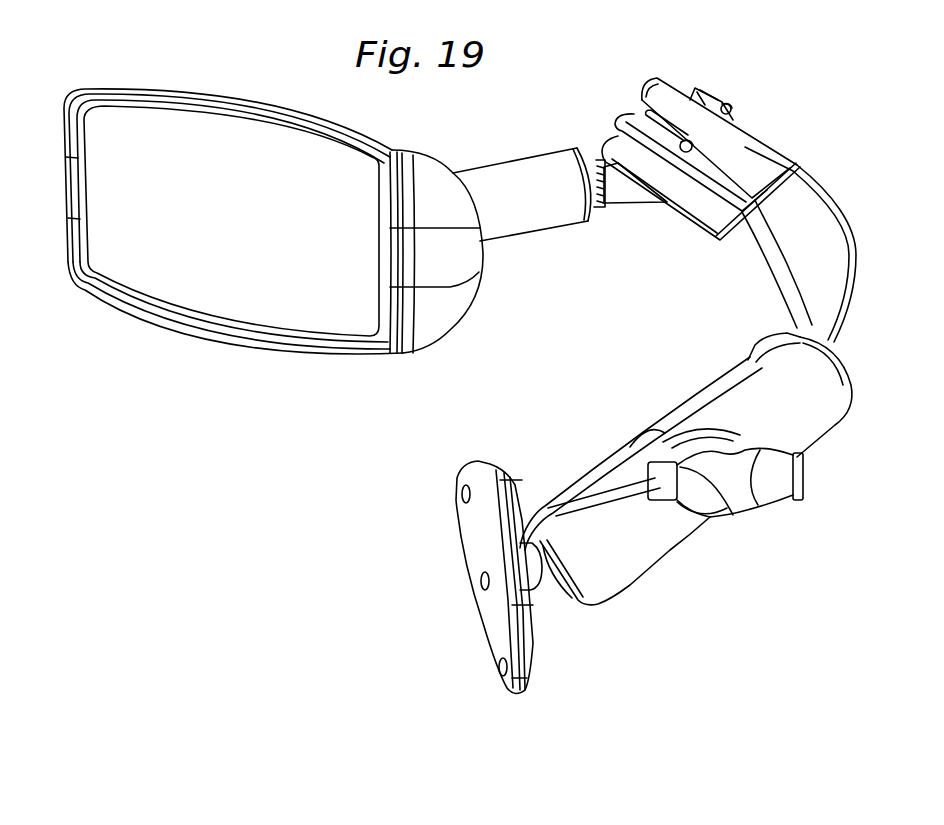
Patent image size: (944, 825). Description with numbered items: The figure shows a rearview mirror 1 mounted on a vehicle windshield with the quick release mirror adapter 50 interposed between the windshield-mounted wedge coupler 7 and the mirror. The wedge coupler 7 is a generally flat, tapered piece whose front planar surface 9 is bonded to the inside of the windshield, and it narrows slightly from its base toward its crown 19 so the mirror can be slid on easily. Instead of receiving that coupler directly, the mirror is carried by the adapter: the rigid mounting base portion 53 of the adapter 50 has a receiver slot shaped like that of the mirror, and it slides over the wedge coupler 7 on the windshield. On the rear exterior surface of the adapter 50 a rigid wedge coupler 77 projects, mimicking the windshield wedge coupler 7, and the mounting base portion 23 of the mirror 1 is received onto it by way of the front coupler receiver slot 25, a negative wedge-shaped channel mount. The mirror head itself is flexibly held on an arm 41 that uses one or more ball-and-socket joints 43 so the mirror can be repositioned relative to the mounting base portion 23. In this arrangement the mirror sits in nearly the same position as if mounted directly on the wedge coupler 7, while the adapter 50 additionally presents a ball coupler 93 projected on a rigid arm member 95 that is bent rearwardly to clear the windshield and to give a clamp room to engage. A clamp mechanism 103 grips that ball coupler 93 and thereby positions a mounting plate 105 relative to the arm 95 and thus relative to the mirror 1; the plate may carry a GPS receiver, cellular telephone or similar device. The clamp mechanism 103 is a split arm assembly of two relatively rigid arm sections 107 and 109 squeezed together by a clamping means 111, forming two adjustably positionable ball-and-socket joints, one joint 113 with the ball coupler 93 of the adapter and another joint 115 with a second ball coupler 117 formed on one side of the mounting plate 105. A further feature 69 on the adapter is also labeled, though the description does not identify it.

The rearview mirror 1 is at (240, 240).
The arm 41 is at (541, 210).
The ball-and-socket joint 43 is at (602, 205).
The mounting base portion 23 is at (724, 203).
The front coupler receiver slot 25 is at (616, 120).
The rigid mounting base portion 53 is at (687, 118).
The rounded end of top plate 69 is at (652, 82).
The wedge coupler 77 is at (642, 112).
The crown 19 is at (695, 88).
The wedge coupler 7 is at (713, 90).
The front planar surface 9 is at (728, 104).
The mirror adapter 50 is at (822, 189).
The rigid arm member 95 is at (807, 281).
The clamp mechanism 103 is at (689, 487).
The ball-and-socket joint 113 is at (768, 337).
The ball coupler 93 is at (837, 353).
The arm section 109 is at (612, 462).
The arm section 107 is at (648, 555).
The clamping means 111 is at (737, 490).
The ball-and-socket joint 115 is at (538, 508).
The ball coupler 117 is at (556, 600).
The mounting plate 105 is at (485, 607).